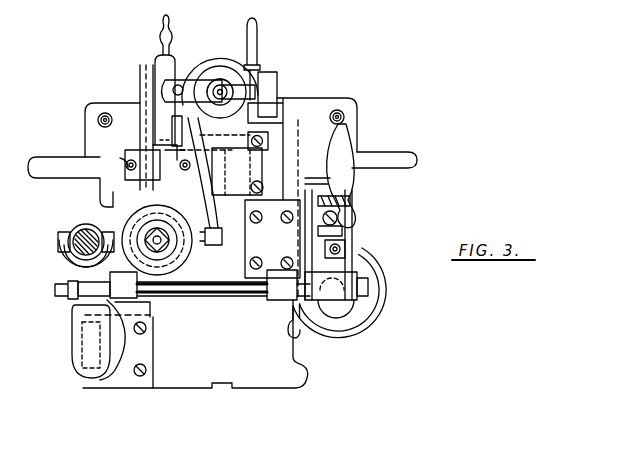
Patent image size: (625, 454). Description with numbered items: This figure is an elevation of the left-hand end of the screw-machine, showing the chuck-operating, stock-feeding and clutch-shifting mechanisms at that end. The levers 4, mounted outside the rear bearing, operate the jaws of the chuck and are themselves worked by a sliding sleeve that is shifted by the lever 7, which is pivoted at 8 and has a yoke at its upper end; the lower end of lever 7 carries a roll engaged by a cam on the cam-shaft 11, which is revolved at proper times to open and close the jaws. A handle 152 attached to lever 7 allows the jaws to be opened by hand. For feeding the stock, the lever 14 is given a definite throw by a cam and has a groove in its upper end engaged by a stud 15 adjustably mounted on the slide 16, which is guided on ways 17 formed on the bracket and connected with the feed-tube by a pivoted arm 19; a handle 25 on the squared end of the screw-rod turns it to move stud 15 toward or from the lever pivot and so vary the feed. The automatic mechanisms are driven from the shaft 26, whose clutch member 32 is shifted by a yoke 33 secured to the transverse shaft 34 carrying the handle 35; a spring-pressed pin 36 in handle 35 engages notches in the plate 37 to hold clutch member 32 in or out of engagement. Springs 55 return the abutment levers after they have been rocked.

The levers 4 is at (140, 78).
The lever 7 is at (284, 112).
The pivot 8 is at (269, 141).
The cam-shaft 11 is at (170, 248).
The lever 14 is at (210, 210).
The stud 15 is at (124, 164).
The slide 16 is at (158, 110).
The ways 17 is at (176, 130).
The pivoted arm 19 is at (213, 80).
The handle 25 is at (172, 22).
The shaft 26 is at (76, 229).
The clutch member 32 is at (98, 236).
The yoke 33 is at (70, 262).
The shaft 34 is at (205, 298).
The handle 35 is at (345, 147).
The spring-pressed pin 36 is at (348, 206).
The plate 37 is at (272, 229).
The springs 55 is at (380, 270).
The handle 152 is at (258, 50).